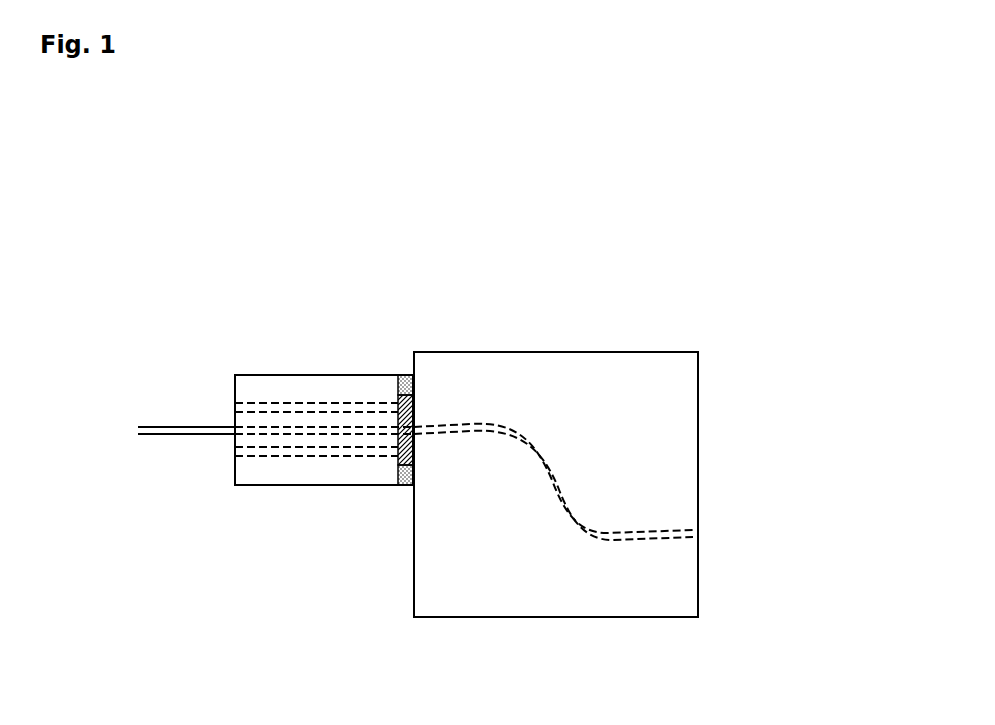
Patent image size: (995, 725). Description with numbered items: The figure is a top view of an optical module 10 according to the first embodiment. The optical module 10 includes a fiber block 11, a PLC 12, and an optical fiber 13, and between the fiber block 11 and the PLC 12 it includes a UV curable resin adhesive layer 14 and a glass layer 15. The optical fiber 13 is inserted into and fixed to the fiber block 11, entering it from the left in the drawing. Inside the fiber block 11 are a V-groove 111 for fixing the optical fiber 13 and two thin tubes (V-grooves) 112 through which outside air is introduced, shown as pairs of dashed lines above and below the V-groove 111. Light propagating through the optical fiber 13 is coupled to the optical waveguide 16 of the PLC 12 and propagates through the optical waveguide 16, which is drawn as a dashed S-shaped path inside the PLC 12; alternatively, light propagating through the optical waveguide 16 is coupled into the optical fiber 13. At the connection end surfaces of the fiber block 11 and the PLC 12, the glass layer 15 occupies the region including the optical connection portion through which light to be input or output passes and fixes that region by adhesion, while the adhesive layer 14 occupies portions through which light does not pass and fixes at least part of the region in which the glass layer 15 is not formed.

The optical module 10 is at (398, 258).
The fiber block 11 is at (297, 347).
The V-groove 111 is at (235, 427).
The thin tubes (V-grooves) 112 is at (235, 405).
The PLC 12 is at (545, 333).
The optical fiber 13 is at (155, 428).
The UV curable resin adhesive layer 14 is at (408, 387).
The glass layer 15 is at (397, 377).
The optical waveguide 16 is at (693, 528).